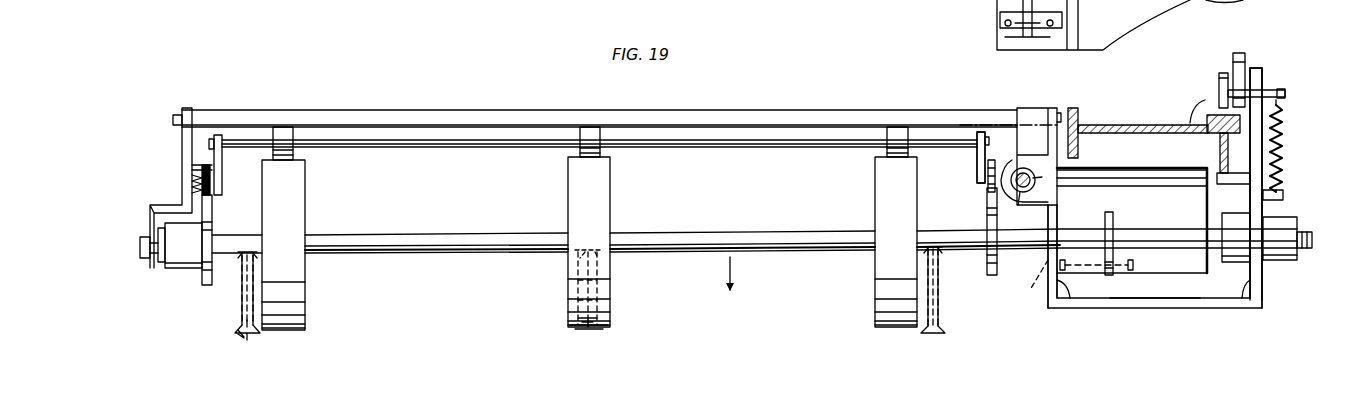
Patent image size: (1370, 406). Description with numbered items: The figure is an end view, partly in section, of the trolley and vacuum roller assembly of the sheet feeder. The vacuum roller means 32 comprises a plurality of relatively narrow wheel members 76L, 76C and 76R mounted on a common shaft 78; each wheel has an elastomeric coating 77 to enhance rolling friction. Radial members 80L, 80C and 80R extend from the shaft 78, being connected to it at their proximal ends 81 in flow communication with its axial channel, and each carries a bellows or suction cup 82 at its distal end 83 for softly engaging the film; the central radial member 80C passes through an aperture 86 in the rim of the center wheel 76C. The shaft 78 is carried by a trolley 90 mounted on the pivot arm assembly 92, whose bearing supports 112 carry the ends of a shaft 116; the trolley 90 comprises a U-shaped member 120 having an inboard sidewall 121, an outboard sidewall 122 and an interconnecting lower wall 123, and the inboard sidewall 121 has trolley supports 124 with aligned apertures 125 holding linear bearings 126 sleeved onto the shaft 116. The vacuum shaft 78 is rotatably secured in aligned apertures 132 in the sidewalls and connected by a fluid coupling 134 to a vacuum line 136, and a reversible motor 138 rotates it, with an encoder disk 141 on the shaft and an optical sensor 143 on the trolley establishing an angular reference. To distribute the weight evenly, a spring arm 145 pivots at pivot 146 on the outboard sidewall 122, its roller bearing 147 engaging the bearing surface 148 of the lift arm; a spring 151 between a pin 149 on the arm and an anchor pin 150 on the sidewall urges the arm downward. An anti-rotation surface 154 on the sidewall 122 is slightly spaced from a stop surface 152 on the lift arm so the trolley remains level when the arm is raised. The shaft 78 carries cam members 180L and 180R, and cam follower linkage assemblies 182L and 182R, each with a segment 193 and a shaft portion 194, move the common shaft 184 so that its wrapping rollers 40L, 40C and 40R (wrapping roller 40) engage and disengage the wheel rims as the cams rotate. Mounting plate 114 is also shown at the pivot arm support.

The vacuum roller means 32 is at (781, 94).
The wrapping roller 40 is at (238, 290).
The left wrapping roller element 40L is at (283, 126).
The center wrapping roller element 40C is at (590, 126).
The right wrapping roller element 40R is at (897, 126).
The left wheel member 76L is at (305, 270).
The center wheel member 76C is at (610, 271).
The right wheel member 76R is at (875, 268).
The elastomeric coating 77 is at (290, 308).
The shaft 78 is at (465, 240).
The left radial member 80L is at (240, 316).
The central radial member 80C is at (578, 288).
The right radial member 80R is at (940, 298).
The proximal end 81 is at (257, 252).
The bellows or suction cup 82 is at (247, 340).
The distal end 83 is at (236, 332).
The aperture 86 is at (575, 316).
The trolley 90 is at (1255, 340).
The pivot arm assembly 92 is at (1140, 124).
The bearing support 112 is at (1052, 27).
The mounting plate 114 is at (1000, 39).
The rod or shaft 116 is at (1018, 172).
The U-shaped member 120 is at (1268, 296).
The inboard sidewall 121 is at (1068, 300).
The outboard sidewall 122 is at (1244, 300).
The lower wall 123 is at (1183, 310).
The trolley support 124 is at (1029, 172).
The aperture 125 is at (1033, 176).
The linear bearing 126 is at (1030, 200).
The aperture 132 is at (1030, 290).
The fluid coupling 134 is at (1298, 226).
The vacuum line 136 is at (1303, 248).
The reversible motor 138 is at (1170, 168).
The encoder disk 141 is at (1110, 276).
The optical sensor 143 is at (1130, 272).
The spring arm 145 is at (1243, 52).
The pivot 146 is at (1262, 72).
The roller bearing 147 is at (1219, 76).
The bearing surface 148 is at (1210, 116).
The pin 149 is at (1286, 92).
The anchor pin 150 is at (1283, 192).
The spring 151 is at (1284, 126).
The stop surface 152 is at (1228, 152).
The anti-rotation surface 154 is at (1222, 186).
The left cam member 180L is at (202, 216).
The right cam member 180R is at (987, 218).
The left cam follower linkage assembly 182L is at (195, 197).
The right cam follower linkage assembly 182R is at (988, 182).
The common shaft 184 is at (437, 128).
The segment 193 is at (197, 160).
The shaft portion 194 is at (984, 130).